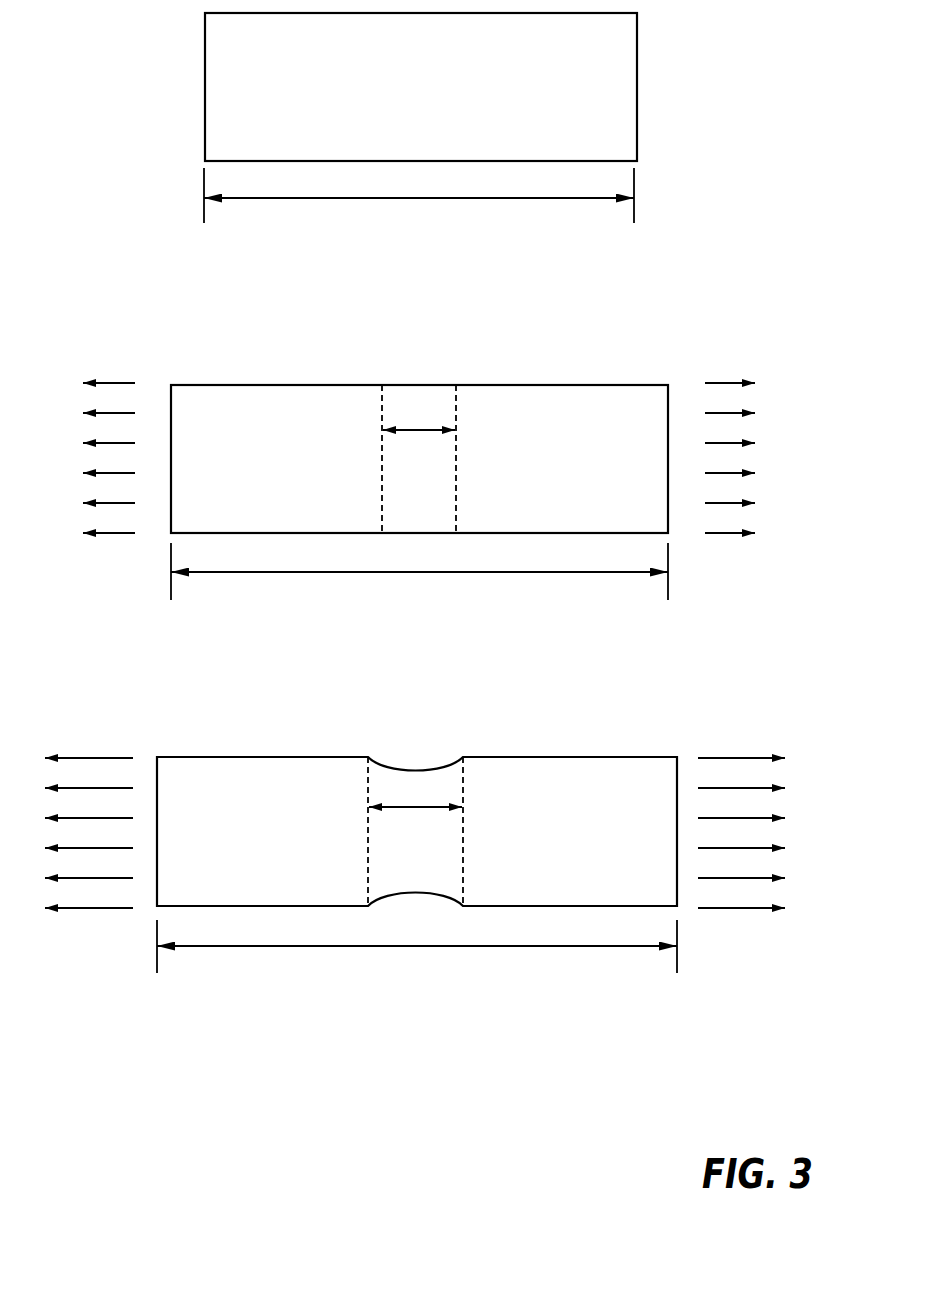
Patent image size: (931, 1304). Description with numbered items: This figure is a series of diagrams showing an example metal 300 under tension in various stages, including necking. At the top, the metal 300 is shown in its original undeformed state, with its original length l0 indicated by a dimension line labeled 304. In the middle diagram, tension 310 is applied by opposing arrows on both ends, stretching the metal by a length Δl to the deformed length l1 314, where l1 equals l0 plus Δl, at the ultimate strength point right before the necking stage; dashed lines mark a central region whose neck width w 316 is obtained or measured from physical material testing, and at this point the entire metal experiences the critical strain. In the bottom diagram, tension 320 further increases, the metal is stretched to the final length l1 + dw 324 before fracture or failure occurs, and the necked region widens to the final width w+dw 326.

The metal 300 is at (297, 59).
The original length l0 304 is at (419, 216).
The tension 310 is at (467, 458).
The deformed length l1 314 is at (419, 592).
The neck width w 316 is at (419, 459).
The tension 320 is at (458, 833).
The final length l1 + dw 324 is at (417, 969).
The final width w+dw 326 is at (415, 831).